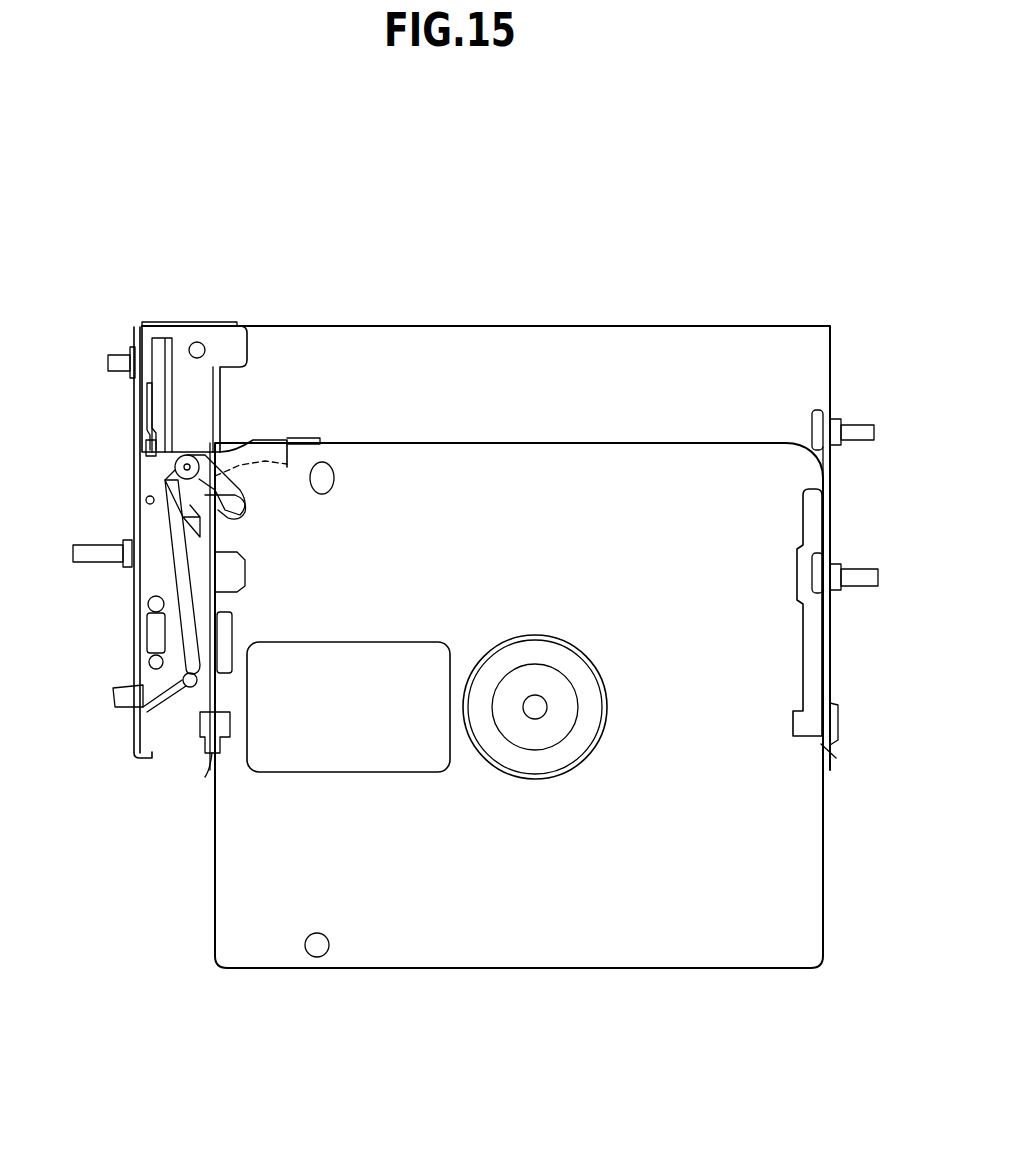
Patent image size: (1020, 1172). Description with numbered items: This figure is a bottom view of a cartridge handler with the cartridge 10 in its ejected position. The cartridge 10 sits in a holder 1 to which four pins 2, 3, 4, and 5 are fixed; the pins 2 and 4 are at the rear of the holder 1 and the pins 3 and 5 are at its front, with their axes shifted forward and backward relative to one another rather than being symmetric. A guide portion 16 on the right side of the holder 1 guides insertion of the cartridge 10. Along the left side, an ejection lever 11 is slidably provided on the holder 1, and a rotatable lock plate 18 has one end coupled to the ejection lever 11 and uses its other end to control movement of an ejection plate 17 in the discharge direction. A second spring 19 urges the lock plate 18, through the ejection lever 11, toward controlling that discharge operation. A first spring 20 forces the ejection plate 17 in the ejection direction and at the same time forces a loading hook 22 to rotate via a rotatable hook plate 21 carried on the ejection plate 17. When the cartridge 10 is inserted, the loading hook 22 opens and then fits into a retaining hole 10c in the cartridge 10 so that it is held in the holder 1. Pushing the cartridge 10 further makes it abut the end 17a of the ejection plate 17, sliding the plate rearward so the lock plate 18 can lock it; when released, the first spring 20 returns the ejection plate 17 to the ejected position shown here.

The holder 1 is at (490, 326).
The pin 2 is at (854, 428).
The pin 3 is at (860, 570).
The pin 4 is at (110, 356).
The pin 5 is at (102, 542).
The cartridge 10 is at (502, 953).
The retaining hole 10c is at (238, 512).
The ejection lever 11 is at (135, 745).
The guide portion 16 is at (210, 765).
The ejection plate 17 is at (272, 440).
The end of ejection plate 17a is at (302, 438).
The lock plate 18 is at (147, 392).
The second spring 19 is at (152, 637).
The first spring 20 is at (180, 593).
The hook plate 21 is at (147, 500).
The loading hook 22 is at (147, 443).